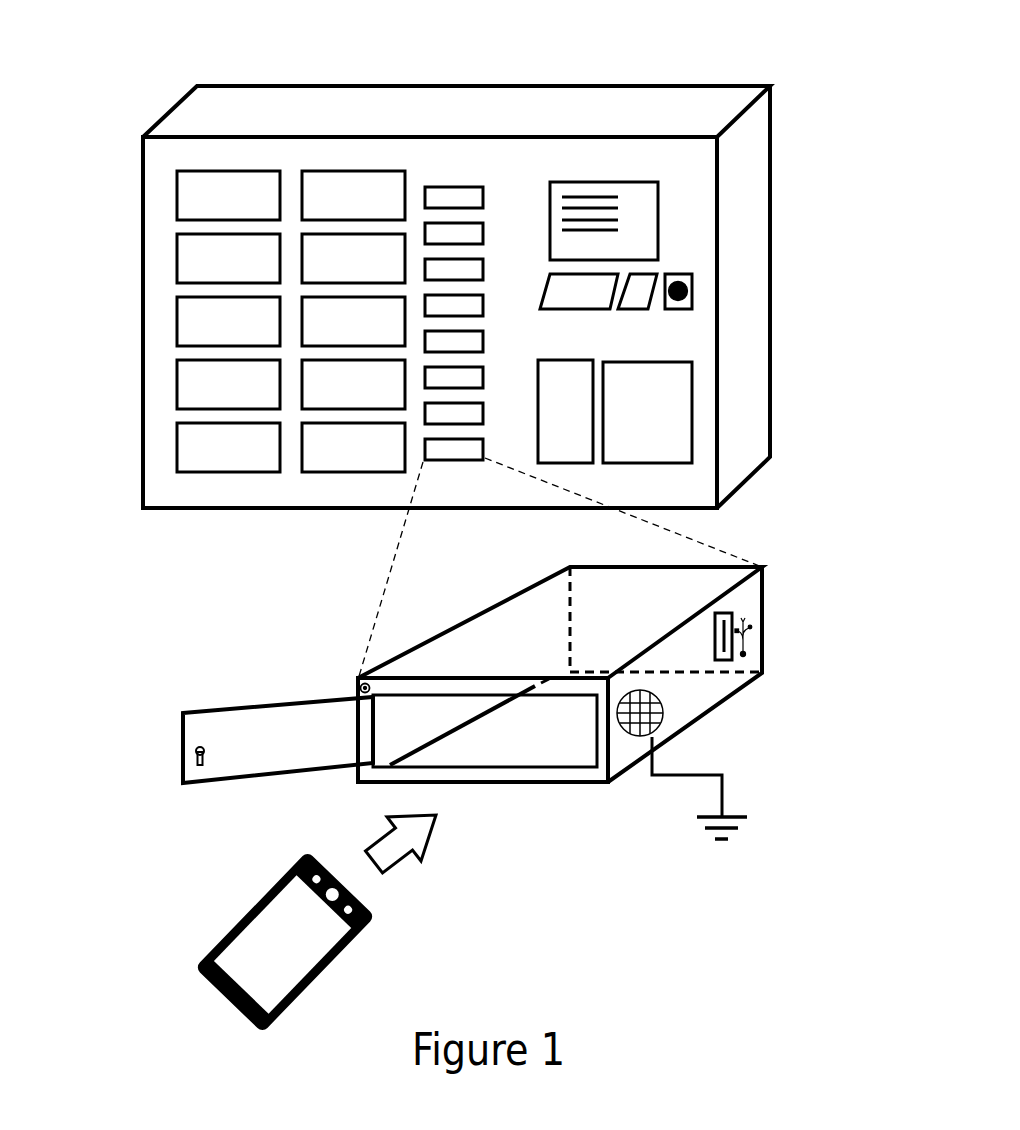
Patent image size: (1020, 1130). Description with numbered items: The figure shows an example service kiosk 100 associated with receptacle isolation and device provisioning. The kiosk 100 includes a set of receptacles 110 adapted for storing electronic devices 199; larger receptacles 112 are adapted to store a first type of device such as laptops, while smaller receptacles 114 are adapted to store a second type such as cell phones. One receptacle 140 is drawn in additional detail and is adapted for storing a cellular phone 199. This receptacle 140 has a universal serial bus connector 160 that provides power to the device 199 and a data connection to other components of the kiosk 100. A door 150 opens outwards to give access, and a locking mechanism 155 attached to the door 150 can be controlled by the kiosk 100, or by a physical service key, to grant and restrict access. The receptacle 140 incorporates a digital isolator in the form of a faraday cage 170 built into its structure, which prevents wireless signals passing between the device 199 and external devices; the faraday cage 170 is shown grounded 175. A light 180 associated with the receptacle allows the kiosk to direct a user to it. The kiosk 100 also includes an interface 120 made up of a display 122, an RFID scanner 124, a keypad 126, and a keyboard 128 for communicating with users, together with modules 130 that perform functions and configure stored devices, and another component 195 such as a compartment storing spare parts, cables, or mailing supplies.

The service kiosk 100 is at (573, 83).
The receptacles 110 is at (125, 170).
The receptacles 112 is at (400, 78).
The receptacles 114 is at (483, 78).
The interface 120 is at (862, 155).
The display 122 is at (658, 220).
The radio frequency identification (RFID) scanner 124 is at (692, 291).
The keypad 126 is at (637, 309).
The keyboard 128 is at (580, 309).
The modules 130 is at (567, 463).
The other components 195 is at (692, 413).
The receptacle 140 is at (550, 782).
The door 150 is at (282, 702).
The locking mechanism 155 is at (196, 760).
The universal serial bus (USB) connector 160 is at (727, 615).
The digital isolator (faraday cage) 170 is at (663, 718).
The ground 175 is at (722, 790).
The lights 180 is at (357, 688).
The electronic device 199 is at (375, 918).